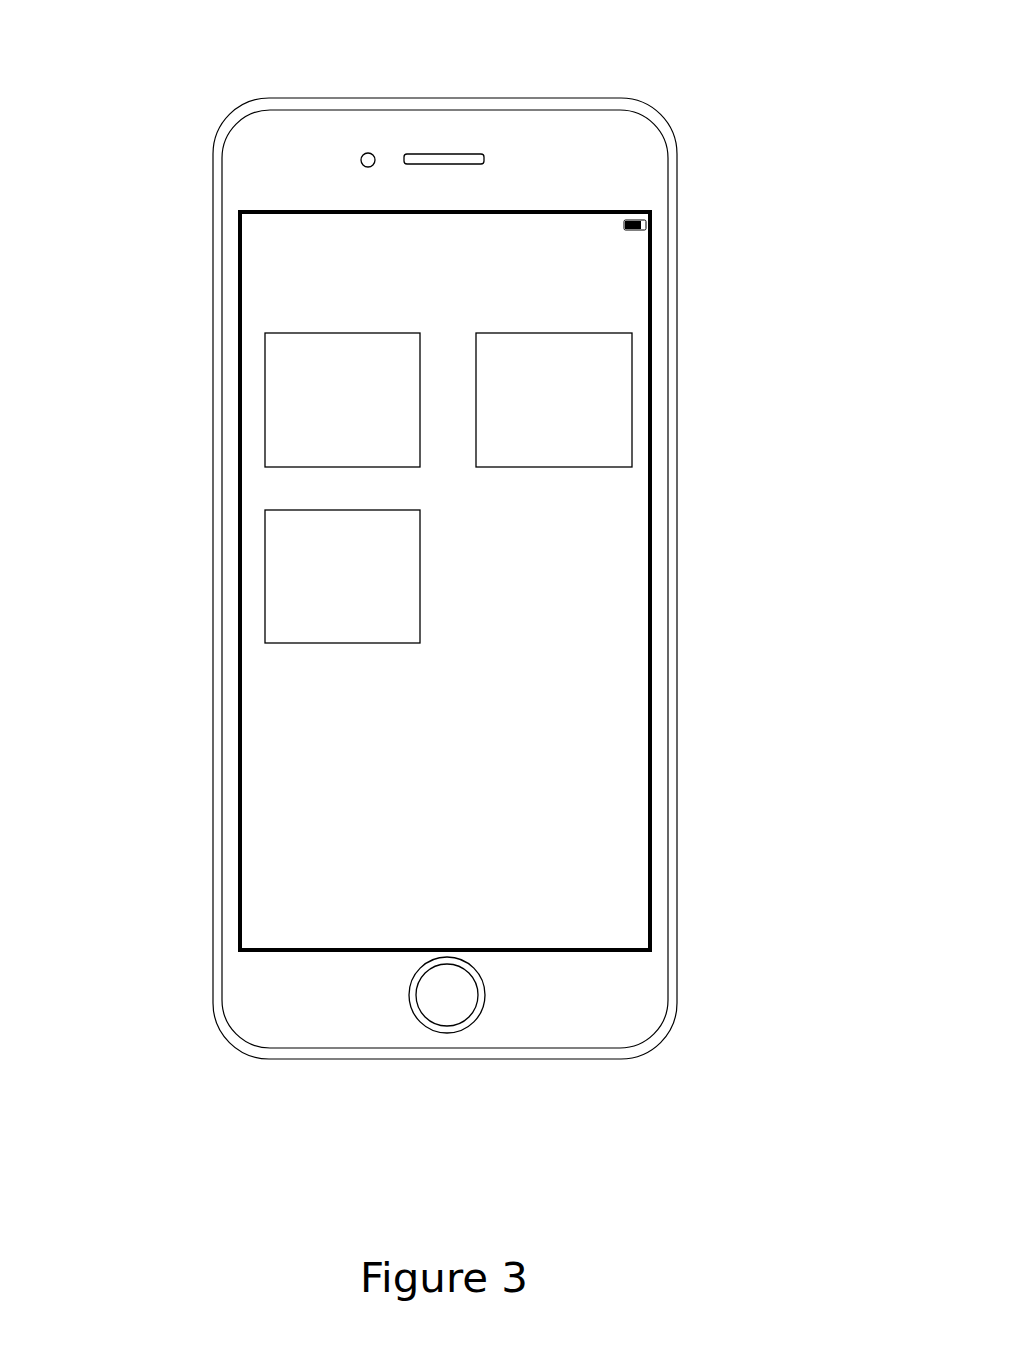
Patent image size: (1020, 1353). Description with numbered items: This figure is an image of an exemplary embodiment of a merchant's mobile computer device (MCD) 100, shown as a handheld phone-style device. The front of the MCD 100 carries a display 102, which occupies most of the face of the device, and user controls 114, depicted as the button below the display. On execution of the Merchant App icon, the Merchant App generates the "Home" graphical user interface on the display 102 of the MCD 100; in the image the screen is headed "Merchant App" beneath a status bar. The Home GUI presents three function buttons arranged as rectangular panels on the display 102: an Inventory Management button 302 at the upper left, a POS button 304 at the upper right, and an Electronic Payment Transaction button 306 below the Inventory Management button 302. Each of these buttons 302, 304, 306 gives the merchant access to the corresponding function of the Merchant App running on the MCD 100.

The mobile computer device 100 is at (666, 114).
The display 102 is at (240, 777).
The user controls 114 is at (445, 1060).
The Inventory Management function button 302 is at (265, 400).
The POS function button 304 is at (632, 393).
The Electronic Payment Transaction function button 306 is at (223, 578).